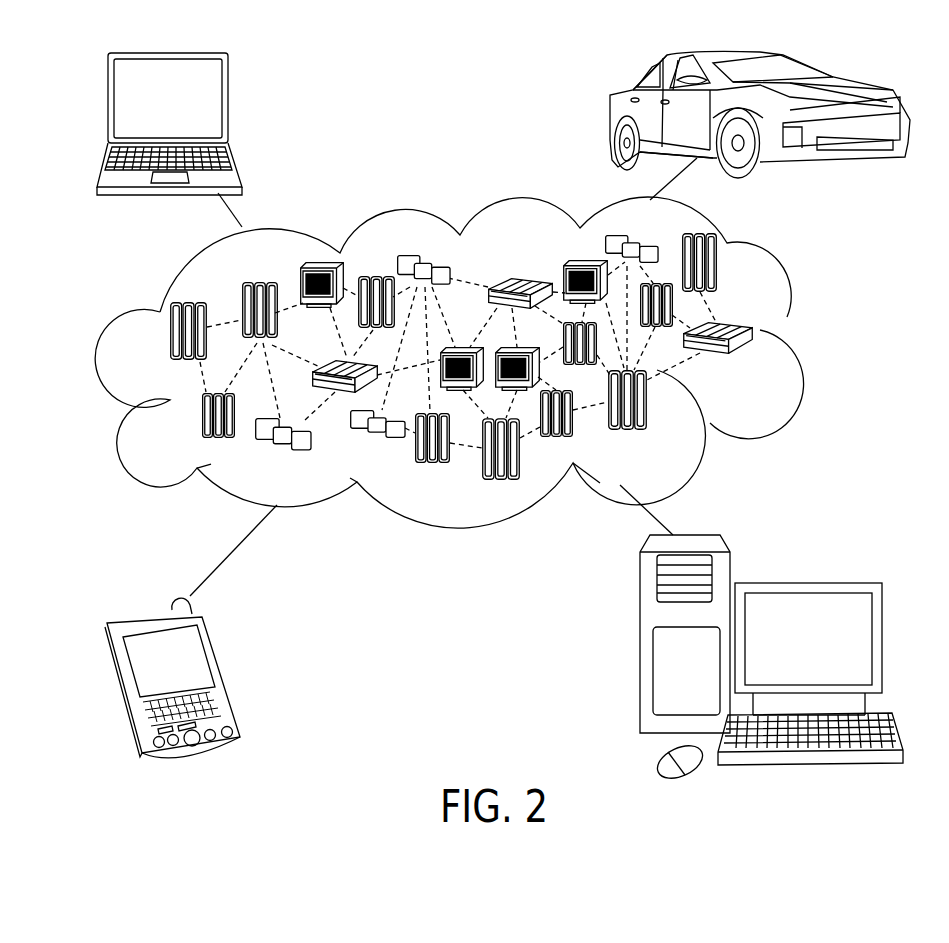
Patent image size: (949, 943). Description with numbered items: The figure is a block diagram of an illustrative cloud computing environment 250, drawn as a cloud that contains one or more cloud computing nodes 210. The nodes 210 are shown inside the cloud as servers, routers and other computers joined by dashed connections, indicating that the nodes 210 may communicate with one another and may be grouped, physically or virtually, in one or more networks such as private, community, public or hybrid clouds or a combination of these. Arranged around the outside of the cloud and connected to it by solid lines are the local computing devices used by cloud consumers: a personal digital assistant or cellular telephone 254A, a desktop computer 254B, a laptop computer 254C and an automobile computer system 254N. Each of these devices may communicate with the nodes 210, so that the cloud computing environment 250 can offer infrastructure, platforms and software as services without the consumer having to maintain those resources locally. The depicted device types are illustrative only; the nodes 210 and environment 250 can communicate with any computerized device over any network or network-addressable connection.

The cloud computing nodes 210 is at (760, 363).
The cloud computing environment 250 is at (805, 336).
The personal digital assistant (PDA) or cellular telephone 254A is at (223, 672).
The desktop computer 254B is at (803, 583).
The laptop computer 254C is at (228, 102).
The automobile computer system 254N is at (610, 113).